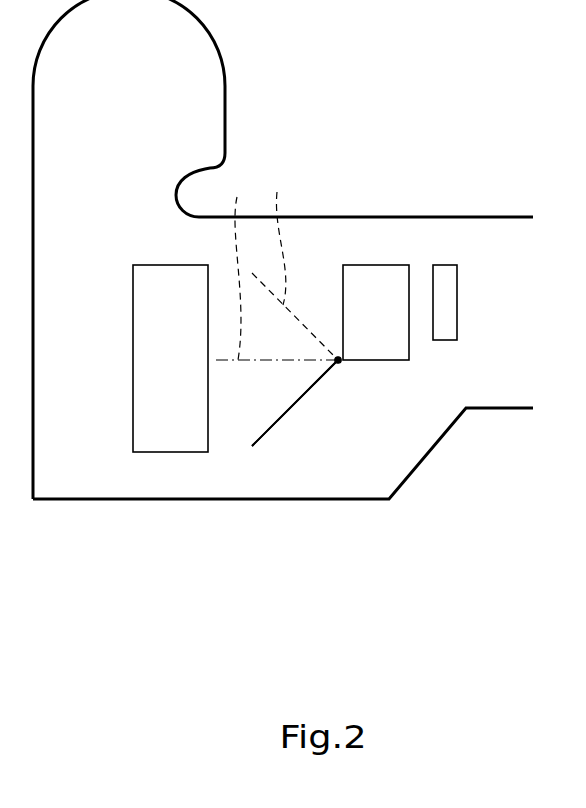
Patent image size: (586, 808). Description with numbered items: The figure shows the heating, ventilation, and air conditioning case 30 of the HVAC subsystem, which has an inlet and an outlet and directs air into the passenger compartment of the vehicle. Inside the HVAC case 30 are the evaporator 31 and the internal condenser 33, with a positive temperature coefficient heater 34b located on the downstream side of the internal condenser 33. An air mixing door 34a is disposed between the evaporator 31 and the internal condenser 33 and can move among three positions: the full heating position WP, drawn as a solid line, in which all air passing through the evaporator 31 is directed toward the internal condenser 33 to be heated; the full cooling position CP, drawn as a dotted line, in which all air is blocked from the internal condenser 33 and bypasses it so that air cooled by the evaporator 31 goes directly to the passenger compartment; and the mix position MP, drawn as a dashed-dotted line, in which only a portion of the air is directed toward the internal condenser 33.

The HVAC case 30 is at (485, 217).
The evaporator 31 is at (168, 452).
The internal condenser 33 is at (375, 265).
The air mixing door 34a is at (308, 398).
The positive temperature coefficient (PTC) heater 34b is at (442, 265).
The mix position MP is at (236, 268).
The full cooling position CP is at (277, 264).
The full heating position WP is at (282, 420).